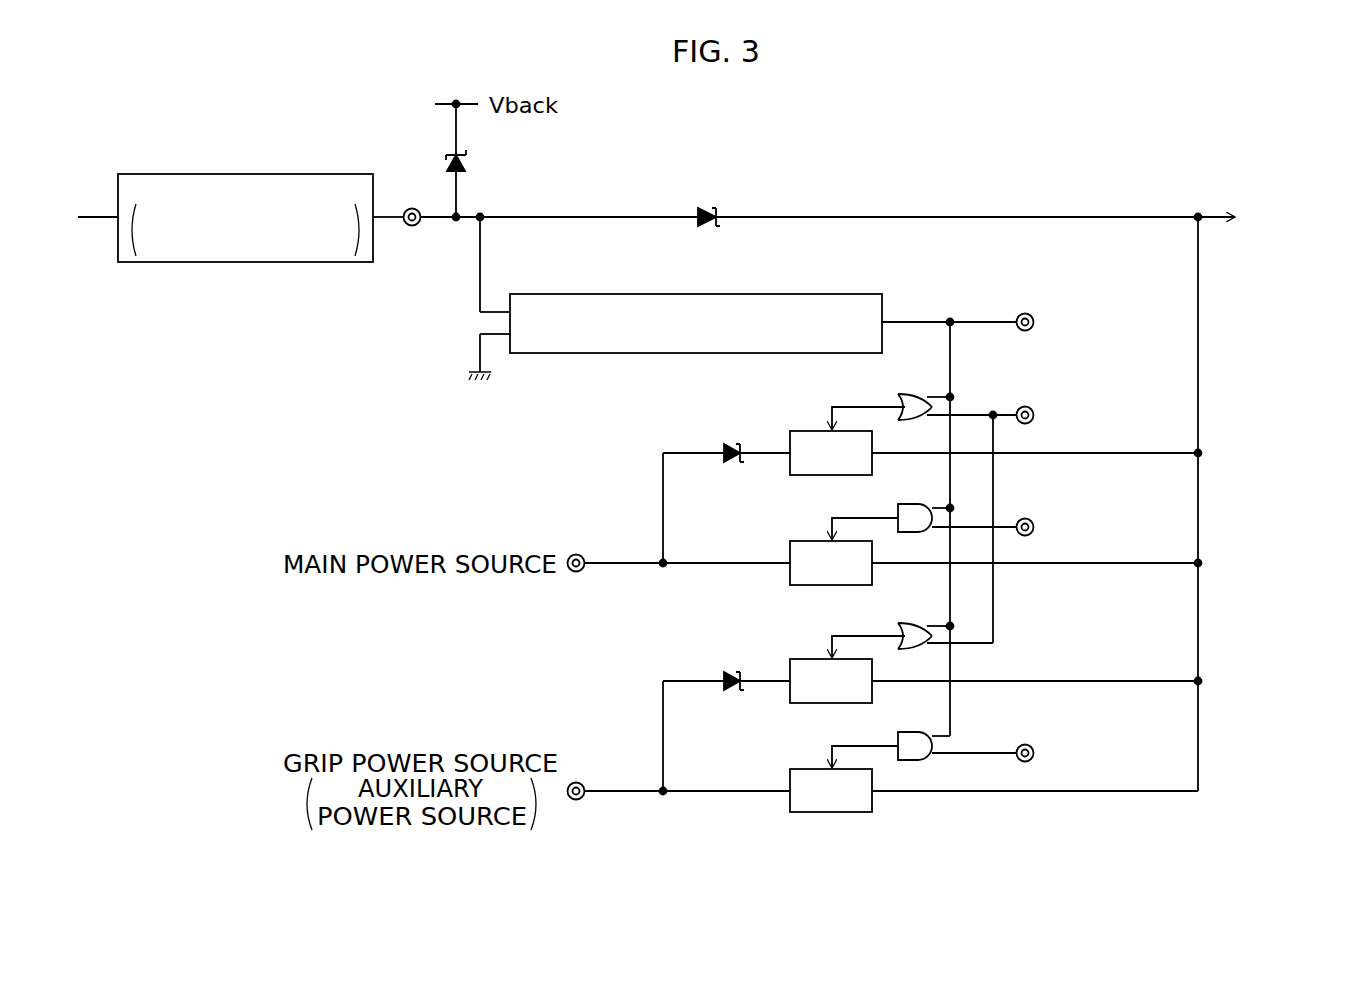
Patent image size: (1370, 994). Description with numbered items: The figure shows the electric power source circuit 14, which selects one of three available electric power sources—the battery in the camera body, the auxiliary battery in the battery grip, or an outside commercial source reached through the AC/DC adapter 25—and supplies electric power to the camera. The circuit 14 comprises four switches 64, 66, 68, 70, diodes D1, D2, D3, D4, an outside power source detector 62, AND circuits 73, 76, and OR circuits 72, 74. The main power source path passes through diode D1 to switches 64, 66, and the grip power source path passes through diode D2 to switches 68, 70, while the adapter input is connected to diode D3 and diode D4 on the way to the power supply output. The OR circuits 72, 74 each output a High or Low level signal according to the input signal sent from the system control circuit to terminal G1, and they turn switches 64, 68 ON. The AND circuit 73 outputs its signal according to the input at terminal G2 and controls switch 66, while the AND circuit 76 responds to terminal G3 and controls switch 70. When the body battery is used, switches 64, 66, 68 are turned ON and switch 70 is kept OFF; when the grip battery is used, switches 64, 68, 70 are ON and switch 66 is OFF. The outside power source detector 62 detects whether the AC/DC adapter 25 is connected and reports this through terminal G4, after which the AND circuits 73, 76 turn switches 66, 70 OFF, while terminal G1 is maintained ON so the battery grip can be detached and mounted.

The electric power source circuit 14 is at (1052, 167).
The AC/DC adapter 25 is at (246, 263).
The outside power source detector 62 is at (699, 292).
The switch 64 is at (807, 430).
The switch 66 is at (807, 540).
The switch 68 is at (807, 658).
The switch 70 is at (807, 768).
The OR circuit 72 is at (918, 394).
The AND circuit 73 is at (918, 504).
The OR circuit 74 is at (918, 622).
The AND circuit 76 is at (918, 732).
The diode D1 is at (732, 443).
The diode D2 is at (732, 669).
The diode D3 is at (468, 160).
The diode D4 is at (704, 209).
The terminal G1 is at (1027, 406).
The terminal G2 is at (1027, 517).
The terminal G3 is at (1027, 744).
The terminal G4 is at (1027, 313).